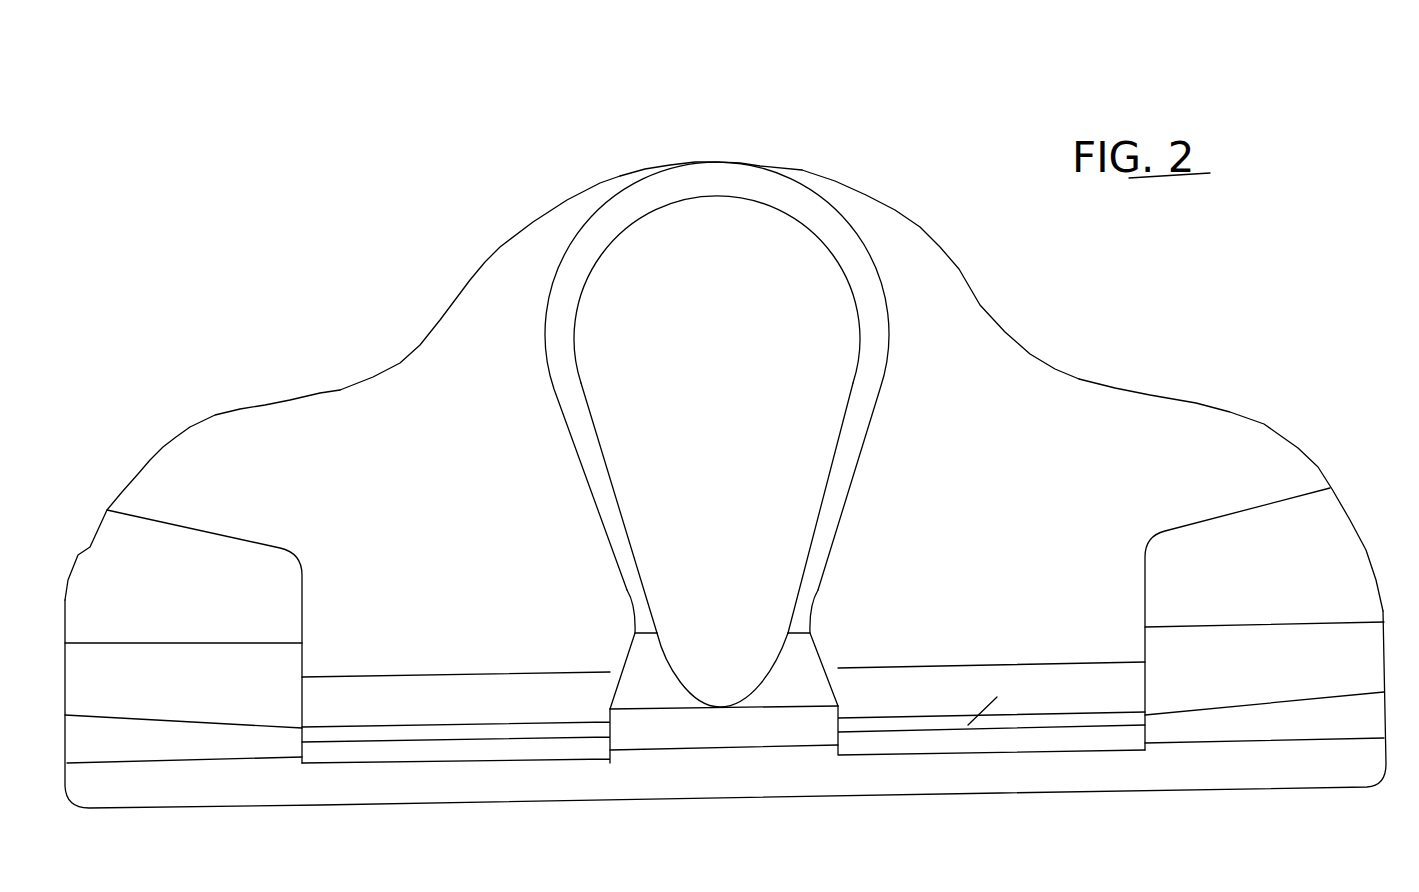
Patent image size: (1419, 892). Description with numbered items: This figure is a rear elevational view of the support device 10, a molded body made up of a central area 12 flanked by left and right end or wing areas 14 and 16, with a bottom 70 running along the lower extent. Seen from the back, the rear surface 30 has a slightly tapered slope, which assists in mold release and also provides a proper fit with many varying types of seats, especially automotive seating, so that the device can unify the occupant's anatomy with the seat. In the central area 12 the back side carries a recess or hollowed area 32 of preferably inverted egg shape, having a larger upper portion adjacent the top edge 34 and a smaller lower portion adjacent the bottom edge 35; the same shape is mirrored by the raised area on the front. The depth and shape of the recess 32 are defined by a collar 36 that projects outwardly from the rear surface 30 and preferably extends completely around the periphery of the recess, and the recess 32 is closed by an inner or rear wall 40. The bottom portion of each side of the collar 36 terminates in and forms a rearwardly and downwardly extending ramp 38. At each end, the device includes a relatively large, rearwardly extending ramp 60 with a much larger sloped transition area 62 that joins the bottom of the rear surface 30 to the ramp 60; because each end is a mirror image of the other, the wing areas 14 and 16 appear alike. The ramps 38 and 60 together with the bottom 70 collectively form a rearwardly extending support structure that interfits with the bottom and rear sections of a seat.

The support device 10 is at (333, 147).
The central area 12 is at (799, 166).
The left end or wing area 14 is at (1288, 443).
The right end or wing area 16 is at (160, 447).
The rear surface 30 is at (1022, 487).
The recess or hollowed area 32 is at (808, 279).
The top edge 34 is at (978, 305).
The bottom edge 35 is at (715, 705).
The collar 36 is at (866, 386).
The ramp 38 is at (825, 660).
The inner or rear wall 40 is at (727, 377).
The ramp 60 is at (200, 700).
The sloped transition area 62 is at (200, 611).
The bottom 70 is at (553, 805).